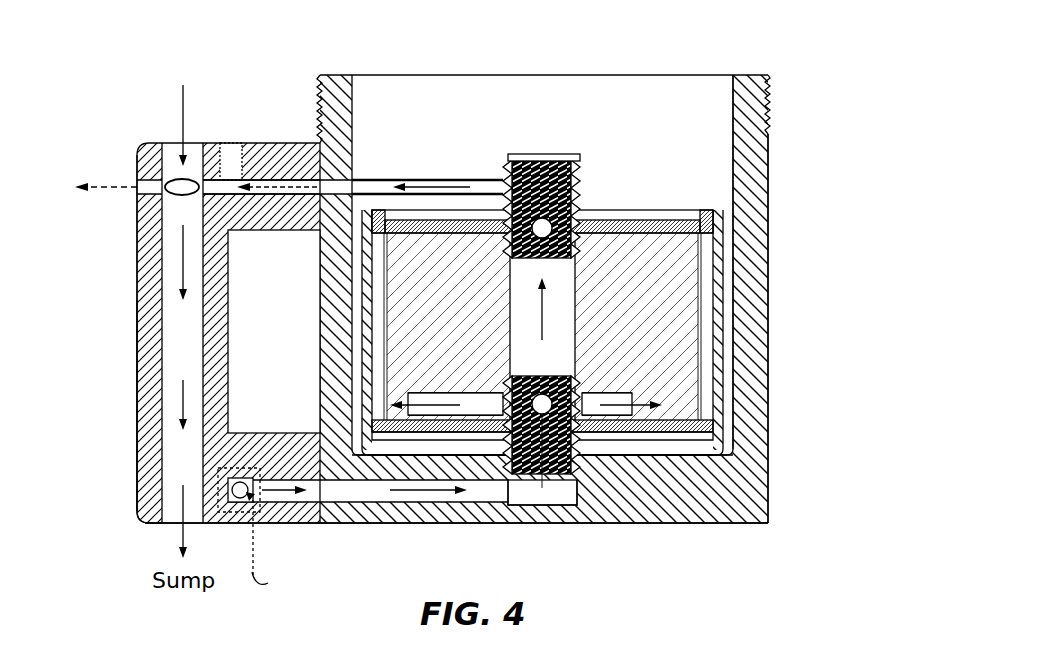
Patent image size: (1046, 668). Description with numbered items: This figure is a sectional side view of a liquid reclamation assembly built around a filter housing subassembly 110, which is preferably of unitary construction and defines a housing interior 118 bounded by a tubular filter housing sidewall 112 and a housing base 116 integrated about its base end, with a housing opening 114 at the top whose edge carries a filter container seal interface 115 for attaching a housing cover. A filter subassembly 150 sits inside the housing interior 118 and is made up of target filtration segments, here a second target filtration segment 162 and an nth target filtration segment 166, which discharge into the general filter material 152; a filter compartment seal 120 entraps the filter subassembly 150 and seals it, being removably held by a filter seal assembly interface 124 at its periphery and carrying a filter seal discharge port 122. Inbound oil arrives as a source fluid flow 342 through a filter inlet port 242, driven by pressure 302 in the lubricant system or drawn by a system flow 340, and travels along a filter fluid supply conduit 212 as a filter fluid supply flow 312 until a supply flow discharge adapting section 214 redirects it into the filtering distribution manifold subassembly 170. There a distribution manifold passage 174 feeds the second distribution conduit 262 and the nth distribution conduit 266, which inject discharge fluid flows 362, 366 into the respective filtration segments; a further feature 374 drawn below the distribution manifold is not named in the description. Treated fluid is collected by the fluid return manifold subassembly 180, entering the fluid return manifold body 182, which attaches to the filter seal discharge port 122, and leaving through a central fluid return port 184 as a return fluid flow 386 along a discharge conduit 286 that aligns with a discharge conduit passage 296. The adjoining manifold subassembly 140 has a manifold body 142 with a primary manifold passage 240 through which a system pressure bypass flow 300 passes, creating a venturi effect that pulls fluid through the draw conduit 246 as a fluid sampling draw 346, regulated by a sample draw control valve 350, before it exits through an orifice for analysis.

The filter housing subassembly 110 is at (786, 548).
The tubular filter housing sidewall 112 is at (770, 481).
The housing opening 114 is at (336, 75).
The filter container seal interface 115 is at (769, 106).
The housing base 116 is at (705, 524).
The housing interior 118 is at (688, 98).
The filter compartment seal 120 is at (672, 222).
The filter seal discharge port 122 is at (600, 222).
The filter seal assembly interface 124 is at (713, 221).
The manifold subassembly 140 is at (126, 128).
The manifold body 142 is at (137, 456).
The filter subassembly 150 is at (724, 284).
The general filter material 152 is at (701, 326).
The second target filtration segment 162 is at (664, 282).
The nth target filtration segment 166 is at (466, 282).
The filtering distribution manifold subassembly 170 is at (597, 490).
The distribution manifold passage 174 is at (540, 362).
The fluid return manifold subassembly 180 is at (594, 144).
The fluid return manifold body 182 is at (583, 190).
The fluid return port 184 is at (545, 145).
The filter fluid supply conduit 212 is at (450, 524).
The supply flow discharge adapting section 214 is at (537, 506).
The primary manifold passage 240 is at (137, 318).
The filter inlet port 242 is at (287, 480).
The draw conduit 246 is at (318, 215).
The second distribution conduit 262 is at (618, 393).
The nth distribution conduit 266 is at (457, 392).
The discharge conduit 286 is at (488, 179).
The discharge conduit passage 296 is at (336, 292).
The system pressure bypass flow 300 is at (178, 112).
The pressure 302 is at (250, 583).
The filter fluid supply flow 312 is at (433, 491).
The system flow 340 is at (181, 392).
The source fluid flow 342 is at (250, 499).
The fluid sampling draw 346 is at (100, 186).
The sample draw control valve 350 is at (233, 142).
The discharge fluid flow 362 is at (650, 402).
The discharge fluid flow 366 is at (428, 402).
The lower bore 374 is at (580, 480).
The return fluid flow 386 is at (412, 186).